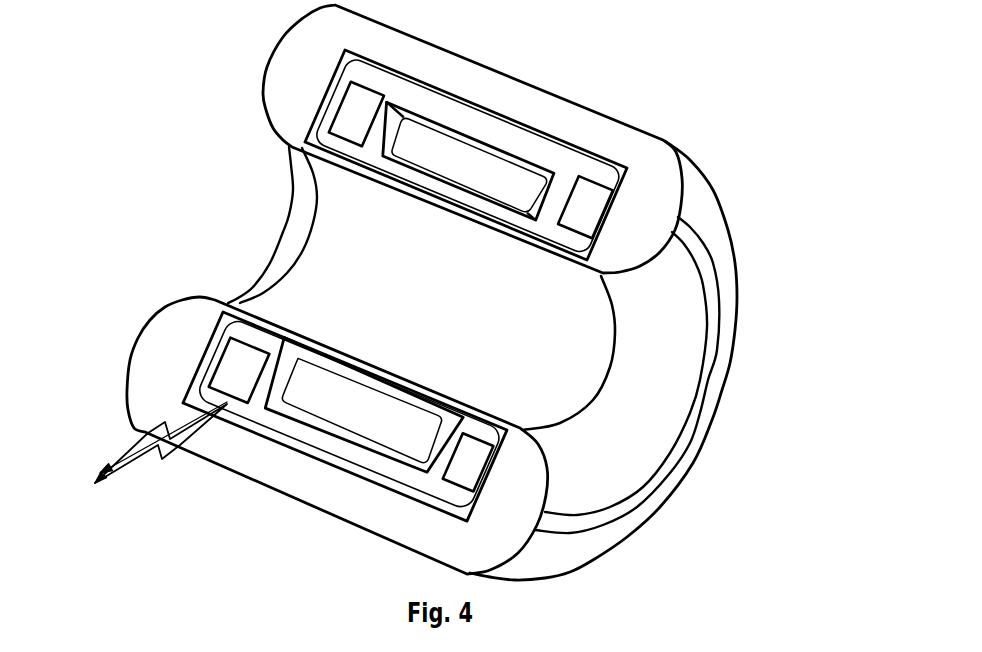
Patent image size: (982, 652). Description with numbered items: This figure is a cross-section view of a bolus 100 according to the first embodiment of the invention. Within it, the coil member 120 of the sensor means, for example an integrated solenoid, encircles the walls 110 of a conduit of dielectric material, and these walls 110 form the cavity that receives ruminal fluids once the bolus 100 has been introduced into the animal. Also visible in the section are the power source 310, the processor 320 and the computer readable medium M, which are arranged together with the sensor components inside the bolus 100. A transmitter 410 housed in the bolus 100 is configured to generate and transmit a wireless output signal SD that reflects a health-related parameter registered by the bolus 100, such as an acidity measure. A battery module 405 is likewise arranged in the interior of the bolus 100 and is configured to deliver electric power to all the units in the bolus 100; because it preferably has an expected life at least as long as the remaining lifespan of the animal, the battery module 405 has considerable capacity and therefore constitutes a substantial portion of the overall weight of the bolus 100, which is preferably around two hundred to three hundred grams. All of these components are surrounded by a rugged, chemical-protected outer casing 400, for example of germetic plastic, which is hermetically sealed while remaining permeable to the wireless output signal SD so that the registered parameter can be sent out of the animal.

The bolus 100 is at (224, 86).
The walls 110 is at (318, 344).
The coil member 120 is at (472, 163).
The power source 310 is at (585, 197).
The processor 320 is at (360, 107).
The outer casing 400 is at (730, 233).
The battery module 405 is at (486, 124).
The transmitter 410 is at (237, 368).
The computer readable medium M is at (463, 473).
The wireless output signal SD is at (149, 457).